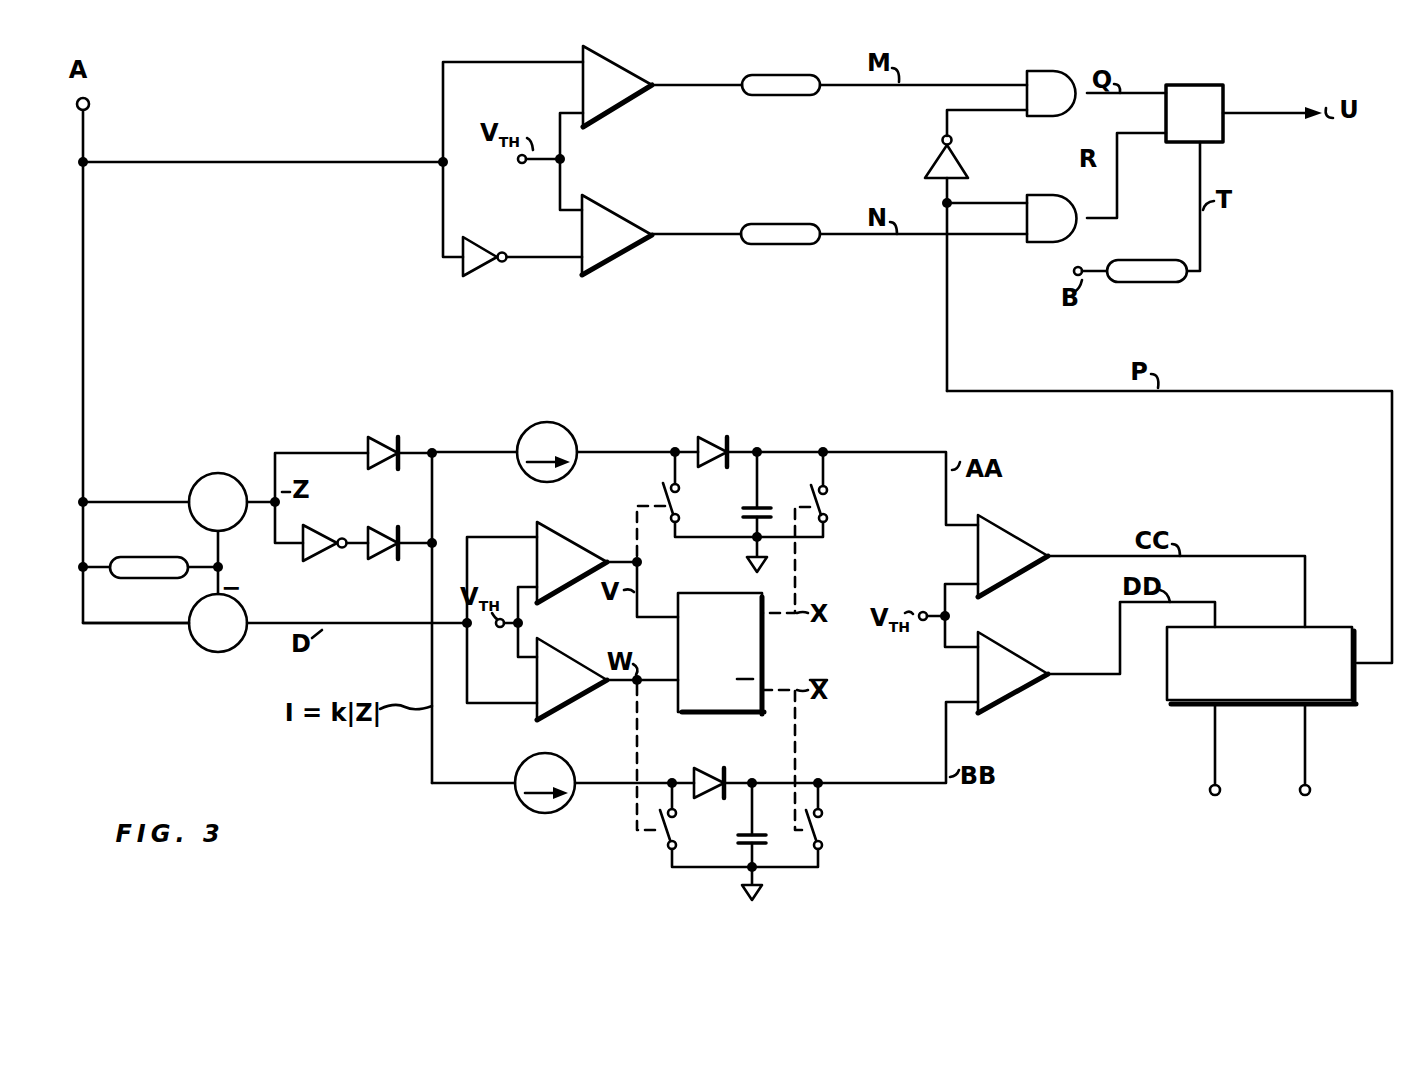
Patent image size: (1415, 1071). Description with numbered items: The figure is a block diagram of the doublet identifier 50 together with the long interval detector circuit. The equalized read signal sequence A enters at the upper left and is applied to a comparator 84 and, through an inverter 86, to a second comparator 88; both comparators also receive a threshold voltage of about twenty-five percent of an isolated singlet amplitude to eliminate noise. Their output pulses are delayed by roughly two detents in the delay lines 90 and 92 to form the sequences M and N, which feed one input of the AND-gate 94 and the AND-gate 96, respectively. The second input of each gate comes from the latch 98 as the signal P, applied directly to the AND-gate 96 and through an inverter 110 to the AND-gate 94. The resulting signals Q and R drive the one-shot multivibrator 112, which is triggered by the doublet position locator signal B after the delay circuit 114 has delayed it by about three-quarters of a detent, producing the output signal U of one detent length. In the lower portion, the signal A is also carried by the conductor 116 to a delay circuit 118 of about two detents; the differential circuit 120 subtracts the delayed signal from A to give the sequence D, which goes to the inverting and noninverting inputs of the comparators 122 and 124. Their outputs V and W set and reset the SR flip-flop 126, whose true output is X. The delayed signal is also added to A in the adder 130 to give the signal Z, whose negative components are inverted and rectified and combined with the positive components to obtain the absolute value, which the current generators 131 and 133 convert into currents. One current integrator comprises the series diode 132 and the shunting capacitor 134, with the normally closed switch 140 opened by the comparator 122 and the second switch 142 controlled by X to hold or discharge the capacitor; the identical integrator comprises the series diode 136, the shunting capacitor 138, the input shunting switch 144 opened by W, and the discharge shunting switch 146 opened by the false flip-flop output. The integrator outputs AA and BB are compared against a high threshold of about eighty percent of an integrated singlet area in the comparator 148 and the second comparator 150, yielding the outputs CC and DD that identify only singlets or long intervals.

The doublet identifier 50 is at (302, 120).
The comparator 84 is at (628, 64).
The inverter 86 is at (480, 267).
The second comparator 88 is at (626, 217).
The delay line 90 is at (800, 97).
The delay line 92 is at (767, 247).
The AND-gate 94 is at (1052, 70).
The AND-gate 96 is at (1033, 245).
The latch 98 is at (1176, 706).
The inverter 110 is at (963, 163).
The one-shot multivibrator 112 is at (1225, 136).
The delay circuit 114 is at (1145, 284).
The conductor 116 is at (92, 340).
The delay circuit 118 is at (145, 582).
The differential circuit 120 is at (214, 653).
The comparator 122 is at (535, 530).
The comparator 124 is at (535, 716).
The SR flip-flop 126 is at (765, 664).
The adder 130 is at (222, 474).
The current generator 131 is at (577, 436).
The series diode 132 is at (718, 438).
The current generator 133 is at (518, 797).
The capacitor 134 is at (762, 505).
The series diode 136 is at (690, 778).
The shunting capacitor 138 is at (746, 830).
The switch 140 is at (662, 496).
The second switch 142 is at (828, 505).
The input shunting switch 144 is at (660, 840).
The discharge shunting switch 146 is at (832, 830).
The comparator 148 is at (1026, 536).
The second comparator 150 is at (1018, 692).